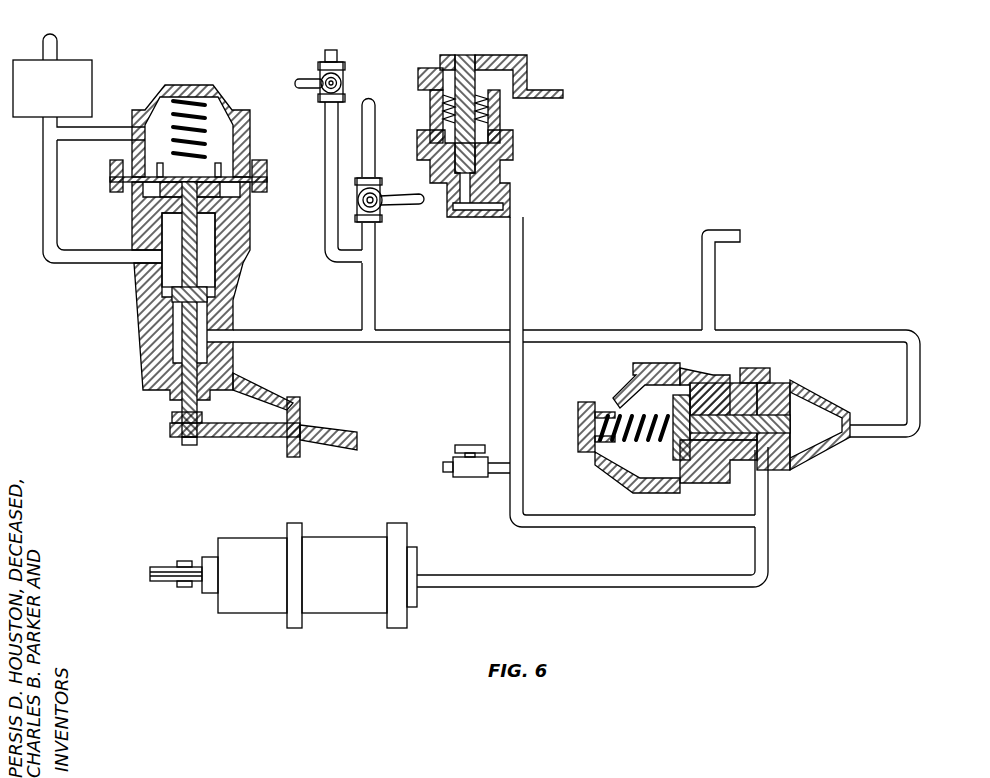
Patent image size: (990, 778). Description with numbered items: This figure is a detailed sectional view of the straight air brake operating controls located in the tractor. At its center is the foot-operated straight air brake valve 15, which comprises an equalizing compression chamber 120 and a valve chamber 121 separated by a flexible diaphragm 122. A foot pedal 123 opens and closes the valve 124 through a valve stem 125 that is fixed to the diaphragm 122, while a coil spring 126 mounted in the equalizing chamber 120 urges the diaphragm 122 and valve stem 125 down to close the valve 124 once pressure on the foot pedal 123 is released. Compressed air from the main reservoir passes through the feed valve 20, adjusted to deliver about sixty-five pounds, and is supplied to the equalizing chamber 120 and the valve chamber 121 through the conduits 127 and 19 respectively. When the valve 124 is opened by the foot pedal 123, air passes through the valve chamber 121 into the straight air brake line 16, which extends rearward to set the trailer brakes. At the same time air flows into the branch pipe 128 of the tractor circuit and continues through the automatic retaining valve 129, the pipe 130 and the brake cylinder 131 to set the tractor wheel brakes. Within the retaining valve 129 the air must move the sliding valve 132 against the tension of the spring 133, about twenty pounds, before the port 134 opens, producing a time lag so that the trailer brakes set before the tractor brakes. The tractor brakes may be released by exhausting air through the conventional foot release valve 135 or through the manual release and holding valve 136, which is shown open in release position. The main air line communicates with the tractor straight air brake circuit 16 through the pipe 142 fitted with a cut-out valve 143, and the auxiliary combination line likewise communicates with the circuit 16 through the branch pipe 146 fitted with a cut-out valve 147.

The feed valve 20 is at (61, 96).
The conduit 127 is at (100, 127).
The conduit 19 is at (60, 268).
The equalizing compression chamber 120 is at (222, 143).
The coil spring 126 is at (194, 102).
The flexible diaphragm 122 is at (230, 177).
The valve chamber 121 is at (207, 243).
The valve stem 125 is at (197, 262).
The straight air brake valve 15 is at (237, 285).
The valve 124 is at (200, 293).
The foot pedal 123 is at (337, 441).
The straight air brake line 16 is at (325, 343).
The branch pipe 128 is at (921, 371).
The cut-out valve 147 is at (343, 77).
The branch pipe 146 is at (325, 176).
The pipe 142 is at (381, 119).
The cut-out valve 143 is at (381, 212).
The manual release and holding valve 136 is at (500, 117).
The foot release valve 135 is at (465, 441).
The automatic retaining valve 129 is at (697, 432).
The spring 133 is at (590, 455).
The sliding valve 132 is at (740, 462).
The port 134 is at (762, 452).
The pipe 130 is at (768, 571).
The brake cylinder 131 is at (352, 587).